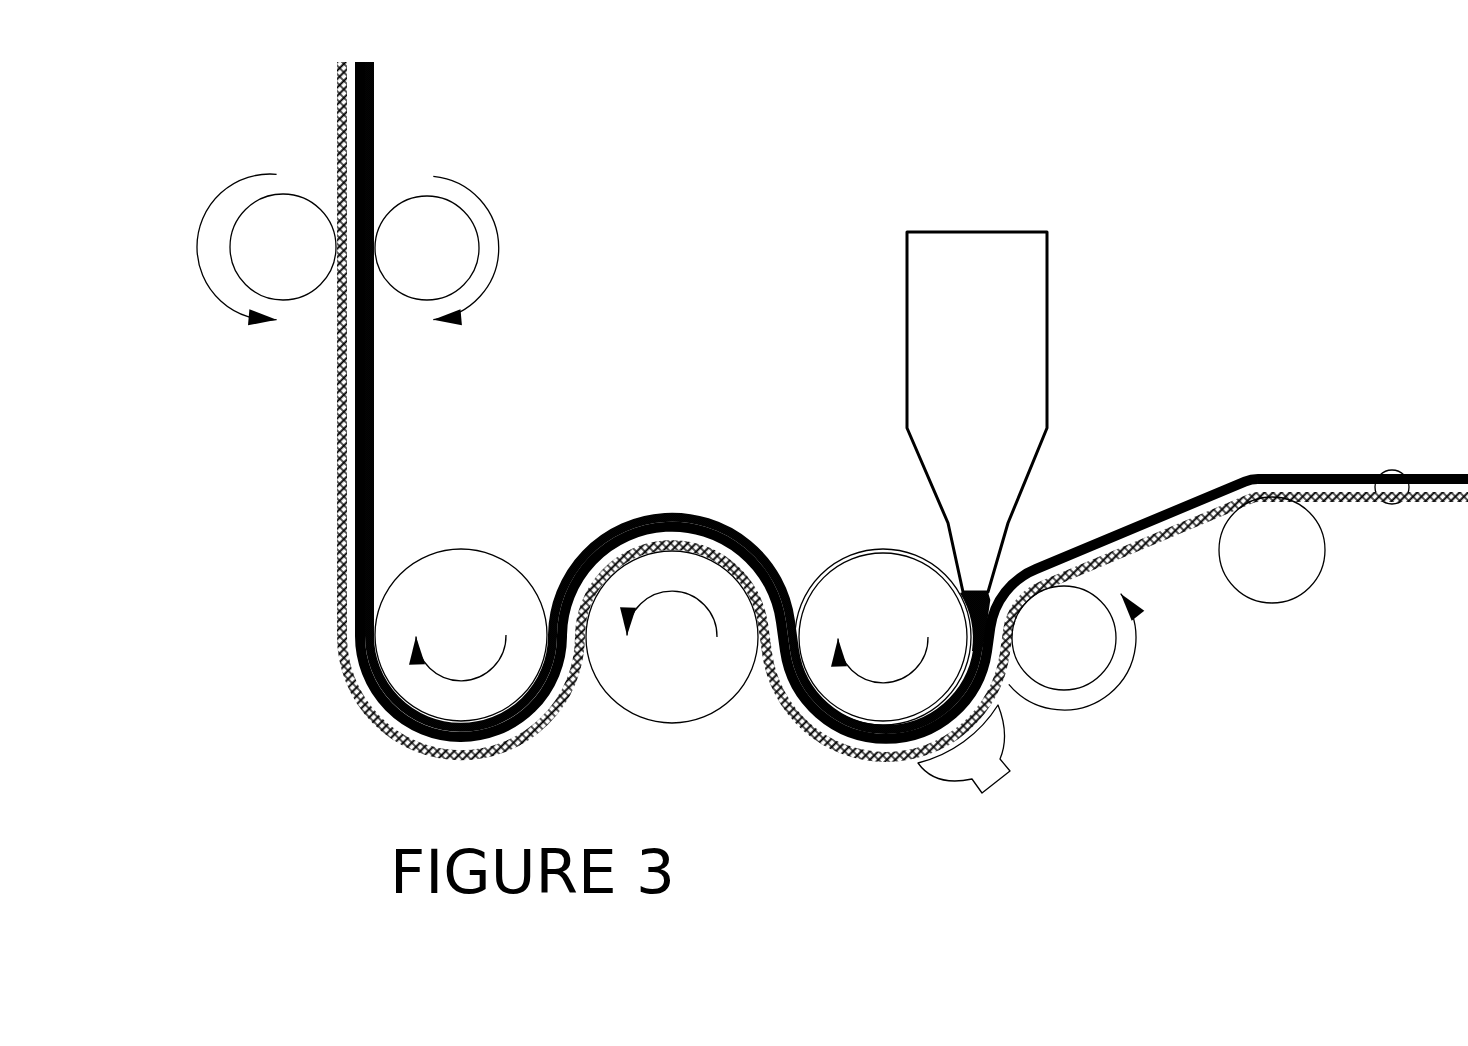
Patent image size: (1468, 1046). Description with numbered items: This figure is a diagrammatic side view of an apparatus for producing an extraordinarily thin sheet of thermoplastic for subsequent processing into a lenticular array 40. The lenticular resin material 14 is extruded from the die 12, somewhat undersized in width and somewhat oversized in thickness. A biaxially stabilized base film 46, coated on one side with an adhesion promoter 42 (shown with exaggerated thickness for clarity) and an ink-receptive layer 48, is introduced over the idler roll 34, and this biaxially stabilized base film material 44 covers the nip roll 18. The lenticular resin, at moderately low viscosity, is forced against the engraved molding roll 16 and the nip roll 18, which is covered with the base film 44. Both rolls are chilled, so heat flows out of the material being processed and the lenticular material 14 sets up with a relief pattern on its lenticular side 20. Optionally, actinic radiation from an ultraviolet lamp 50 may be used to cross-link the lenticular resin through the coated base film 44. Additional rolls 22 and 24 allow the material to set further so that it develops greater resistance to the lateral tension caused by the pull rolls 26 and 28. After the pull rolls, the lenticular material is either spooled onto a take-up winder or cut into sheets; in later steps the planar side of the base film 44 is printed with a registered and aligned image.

The die 12 is at (963, 352).
The lenticular resin material 14 is at (630, 521).
The engraved molding roll 16 is at (883, 637).
The nip roll 18 is at (1064, 638).
The lenticular side 20 is at (377, 480).
The additional roll 22 is at (673, 637).
The additional roll 24 is at (461, 635).
The pull roll 26 is at (428, 248).
The pull roll 28 is at (280, 250).
The idler roll 34 is at (1273, 552).
The lenticular array 40 is at (796, 450).
The adhesion promoter 42 is at (1363, 486).
The biaxially stabilized base film material 44 is at (1424, 475).
The biaxially stabilized base film 46 is at (1325, 484).
The ink-receptive layer 48 is at (1330, 498).
The ultraviolet lamp 50 is at (1010, 771).